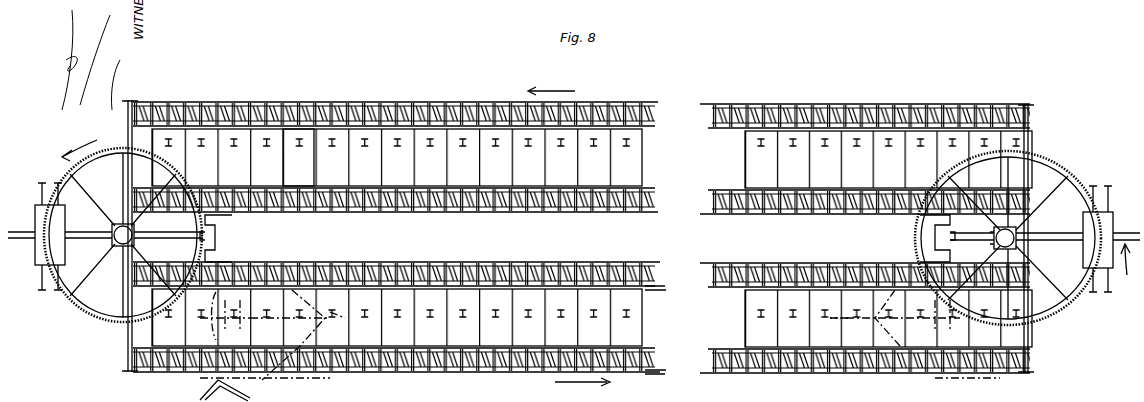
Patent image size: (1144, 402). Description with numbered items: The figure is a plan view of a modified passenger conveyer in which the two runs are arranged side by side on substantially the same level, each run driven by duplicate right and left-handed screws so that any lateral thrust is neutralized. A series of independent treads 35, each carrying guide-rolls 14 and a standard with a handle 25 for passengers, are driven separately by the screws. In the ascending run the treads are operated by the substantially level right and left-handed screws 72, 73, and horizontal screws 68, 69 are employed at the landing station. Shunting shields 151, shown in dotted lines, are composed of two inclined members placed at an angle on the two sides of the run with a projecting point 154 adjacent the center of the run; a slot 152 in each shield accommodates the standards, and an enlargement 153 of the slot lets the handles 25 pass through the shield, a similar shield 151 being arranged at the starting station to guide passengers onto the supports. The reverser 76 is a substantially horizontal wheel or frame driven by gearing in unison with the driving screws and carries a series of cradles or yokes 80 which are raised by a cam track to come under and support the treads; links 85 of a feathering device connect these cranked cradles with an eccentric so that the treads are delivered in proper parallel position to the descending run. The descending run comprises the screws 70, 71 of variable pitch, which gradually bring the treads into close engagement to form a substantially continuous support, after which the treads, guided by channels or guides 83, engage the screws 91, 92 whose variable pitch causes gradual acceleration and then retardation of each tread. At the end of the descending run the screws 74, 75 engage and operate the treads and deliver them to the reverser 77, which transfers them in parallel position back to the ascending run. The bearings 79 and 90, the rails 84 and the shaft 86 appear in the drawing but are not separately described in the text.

The guide-roll 14 is at (1080, 300).
The handle 25 is at (272, 160).
The tread 35 is at (298, 157).
The horizontal screw 68 is at (228, 115).
The horizontal screw 69 is at (255, 205).
The variable pitch screw 70 is at (332, 266).
The variable pitch screw 71 is at (350, 368).
The right-handed screw 72 is at (782, 112).
The left-handed screw 73 is at (788, 210).
The screw 74 is at (838, 265).
The screw 75 is at (842, 368).
The reverser 76 is at (88, 300).
The reverser 77 is at (1040, 208).
The hub bearing 79 is at (992, 242).
The cradle 80 is at (228, 258).
The guide channel 83 is at (718, 104).
The inner guide rail 84 is at (724, 130).
The link 85 is at (104, 222).
The right shaft 86 is at (1058, 240).
The bearing bracket 90 is at (918, 258).
The variable pitch screw 91 is at (645, 372).
The variable pitch screw 92 is at (645, 288).
The shunting shield 151 is at (290, 296).
The slot 152 is at (318, 314).
The enlargement 153 is at (215, 318).
The projecting point 154 is at (330, 310).